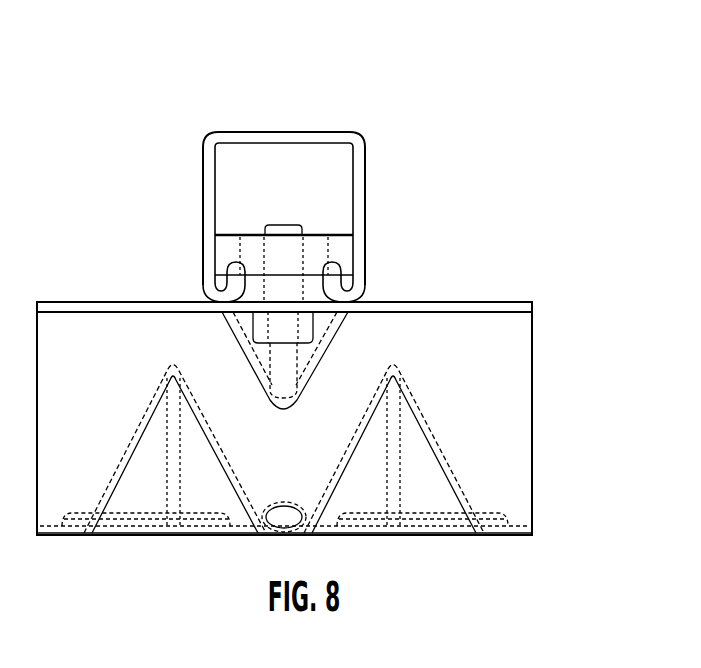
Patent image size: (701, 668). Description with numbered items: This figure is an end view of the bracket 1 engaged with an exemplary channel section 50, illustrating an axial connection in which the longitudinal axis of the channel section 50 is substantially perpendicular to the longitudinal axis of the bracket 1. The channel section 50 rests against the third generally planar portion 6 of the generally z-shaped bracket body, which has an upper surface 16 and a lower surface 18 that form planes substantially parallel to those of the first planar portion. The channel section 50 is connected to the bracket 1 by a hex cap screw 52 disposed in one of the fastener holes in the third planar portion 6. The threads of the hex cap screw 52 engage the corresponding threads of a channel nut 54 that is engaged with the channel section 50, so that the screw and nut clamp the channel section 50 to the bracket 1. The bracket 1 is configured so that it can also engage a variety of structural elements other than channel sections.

The bracket 1 is at (572, 292).
The third generally planar portion 6 is at (478, 307).
The upper surface 16 is at (435, 300).
The lower surface 18 is at (505, 315).
The channel section 50 is at (380, 138).
The hex cap screw 52 is at (276, 323).
The channel nut 54 is at (335, 252).